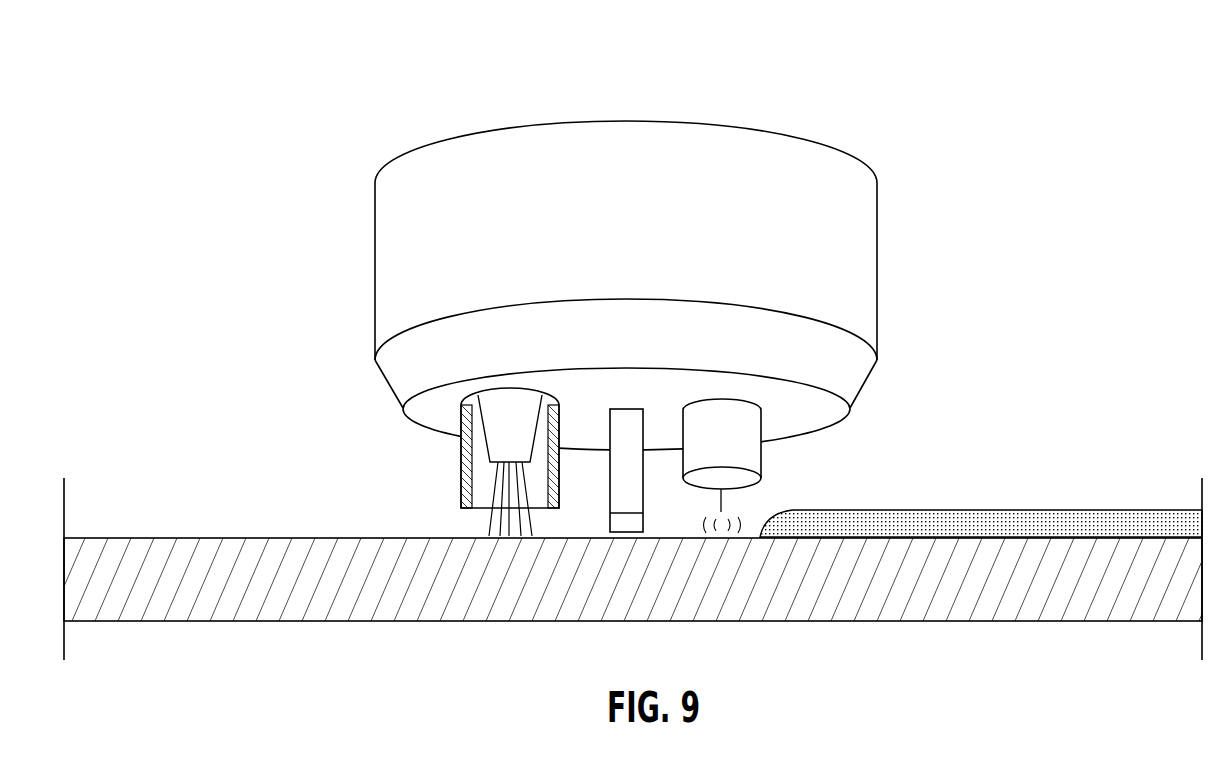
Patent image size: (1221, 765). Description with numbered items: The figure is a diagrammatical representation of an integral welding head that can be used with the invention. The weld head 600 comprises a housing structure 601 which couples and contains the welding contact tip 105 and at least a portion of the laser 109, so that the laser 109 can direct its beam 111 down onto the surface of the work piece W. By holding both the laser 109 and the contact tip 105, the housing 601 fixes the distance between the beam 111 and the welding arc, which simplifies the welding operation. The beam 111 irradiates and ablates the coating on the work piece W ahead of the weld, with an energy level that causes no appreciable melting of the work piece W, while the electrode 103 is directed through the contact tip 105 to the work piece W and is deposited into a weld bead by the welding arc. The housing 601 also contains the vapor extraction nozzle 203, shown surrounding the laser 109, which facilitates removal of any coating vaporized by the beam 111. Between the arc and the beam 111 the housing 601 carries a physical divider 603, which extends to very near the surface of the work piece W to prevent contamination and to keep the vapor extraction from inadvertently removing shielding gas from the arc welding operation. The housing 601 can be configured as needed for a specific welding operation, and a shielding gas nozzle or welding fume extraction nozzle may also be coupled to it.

The weld head 600 is at (626, 233).
The housing structure 601 is at (710, 159).
The laser 109 is at (500, 400).
The vapor extraction nozzle 203 is at (465, 464).
The beam 111 is at (497, 528).
The physical divider 603 is at (643, 510).
The welding contact tip 105 is at (757, 457).
The electrode 103 is at (720, 505).
The work piece W is at (1000, 621).